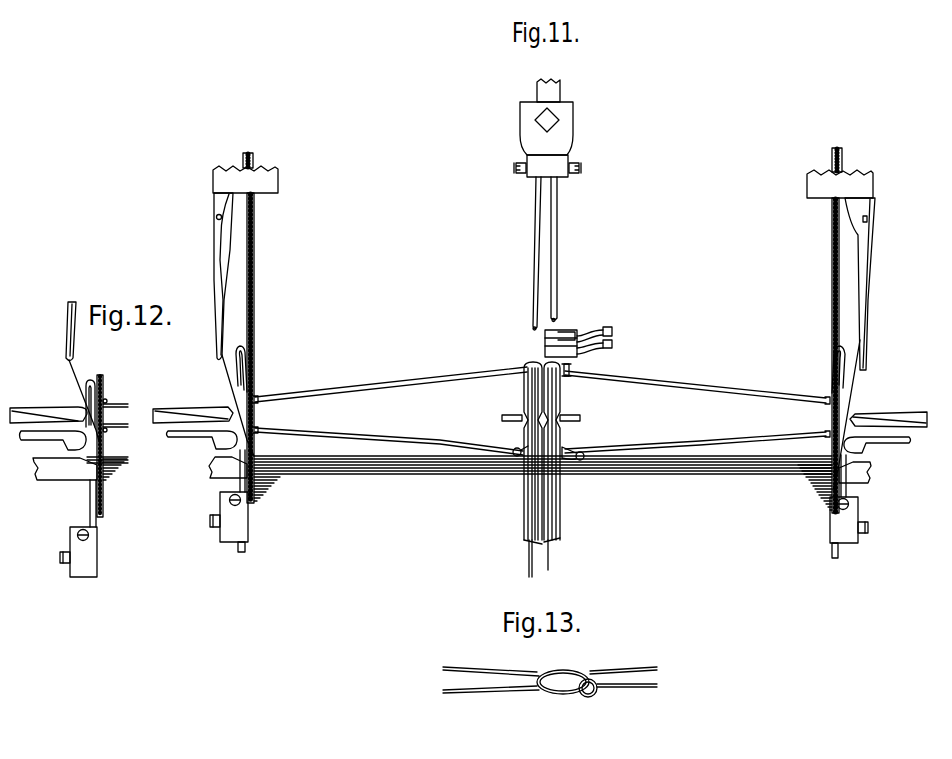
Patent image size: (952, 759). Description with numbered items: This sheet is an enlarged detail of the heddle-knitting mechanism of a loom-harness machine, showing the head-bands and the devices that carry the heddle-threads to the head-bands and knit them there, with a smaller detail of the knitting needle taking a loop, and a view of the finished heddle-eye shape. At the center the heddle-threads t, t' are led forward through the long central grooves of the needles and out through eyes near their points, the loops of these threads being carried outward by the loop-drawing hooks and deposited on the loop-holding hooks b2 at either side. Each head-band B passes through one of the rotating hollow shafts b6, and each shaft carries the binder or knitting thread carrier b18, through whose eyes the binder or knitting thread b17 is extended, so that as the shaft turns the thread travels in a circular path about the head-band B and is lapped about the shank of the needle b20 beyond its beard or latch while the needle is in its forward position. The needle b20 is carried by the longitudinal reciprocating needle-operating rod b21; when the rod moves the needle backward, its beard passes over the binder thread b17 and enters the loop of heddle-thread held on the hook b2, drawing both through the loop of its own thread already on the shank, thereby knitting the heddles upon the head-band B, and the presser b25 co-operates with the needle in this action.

In FIG. 11, the hollow shaft b6 is at (808, 183).
In FIG. 11, the head-band B is at (254, 262).
In FIG. 12, the head-band B is at (100, 446).
In FIG. 11, the binder or knitting thread carrier b18 is at (218, 287).
In FIG. 12, the binder or knitting thread carrier b18 is at (64, 339).
In FIG. 11, the needle b20 is at (250, 362).
In FIG. 12, the needle b20 is at (92, 378).
In FIG. 11, the binder or knitting thread b17 is at (223, 375).
In FIG. 12, the binder or knitting thread b17 is at (72, 374).
In FIG. 11, the loop-holding hook b2 is at (205, 409).
In FIG. 12, the loop-holding hook b2 is at (56, 407).
In FIG. 11, the presser b25 is at (863, 450).
In FIG. 12, the presser b25 is at (60, 447).
In FIG. 11, the needle-operating rod b21 is at (248, 527).
In FIG. 12, the needle-operating rod b21 is at (98, 545).
In FIG. 11, the heddle-thread t is at (522, 471).
In FIG. 11, the heddle-thread t' is at (564, 469).